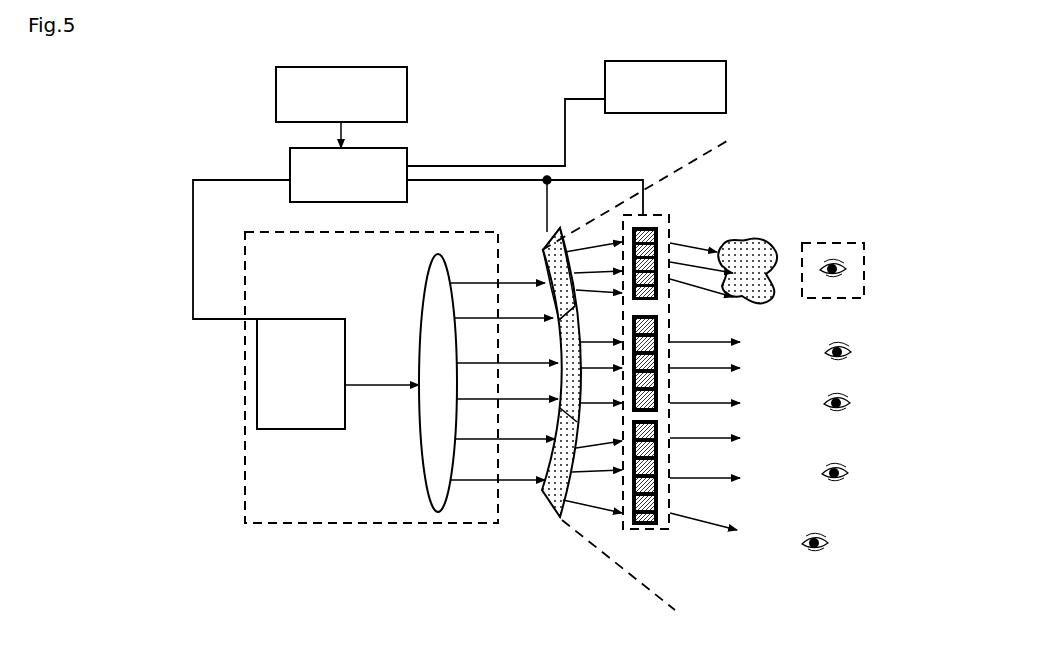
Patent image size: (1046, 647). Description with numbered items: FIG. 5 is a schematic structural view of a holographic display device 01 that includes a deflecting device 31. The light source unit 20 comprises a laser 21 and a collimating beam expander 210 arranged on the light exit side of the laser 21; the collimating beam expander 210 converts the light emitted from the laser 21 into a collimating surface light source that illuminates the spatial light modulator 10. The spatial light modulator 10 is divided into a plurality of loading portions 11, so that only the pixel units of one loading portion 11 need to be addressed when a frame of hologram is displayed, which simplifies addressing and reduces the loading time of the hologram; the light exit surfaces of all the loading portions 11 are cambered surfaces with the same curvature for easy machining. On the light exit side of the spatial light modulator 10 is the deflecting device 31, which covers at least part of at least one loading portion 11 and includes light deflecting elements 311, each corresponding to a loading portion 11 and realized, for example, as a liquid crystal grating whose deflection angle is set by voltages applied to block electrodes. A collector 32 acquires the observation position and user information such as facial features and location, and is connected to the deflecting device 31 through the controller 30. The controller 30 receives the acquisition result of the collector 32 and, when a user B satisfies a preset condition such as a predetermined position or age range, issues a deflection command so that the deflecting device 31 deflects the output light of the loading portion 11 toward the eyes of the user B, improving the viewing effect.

The holographic display device 01 is at (385, 193).
The controller 30 is at (290, 160).
The collector 32 is at (620, 74).
The light source unit 20 is at (245, 376).
The laser 21 is at (302, 430).
The collimating beam expander 210 is at (440, 288).
The spatial light modulator 10 is at (557, 510).
The loading portion 11 is at (543, 250).
The deflecting device 31 is at (670, 528).
The light deflecting element 311 is at (660, 228).
The user B is at (840, 243).